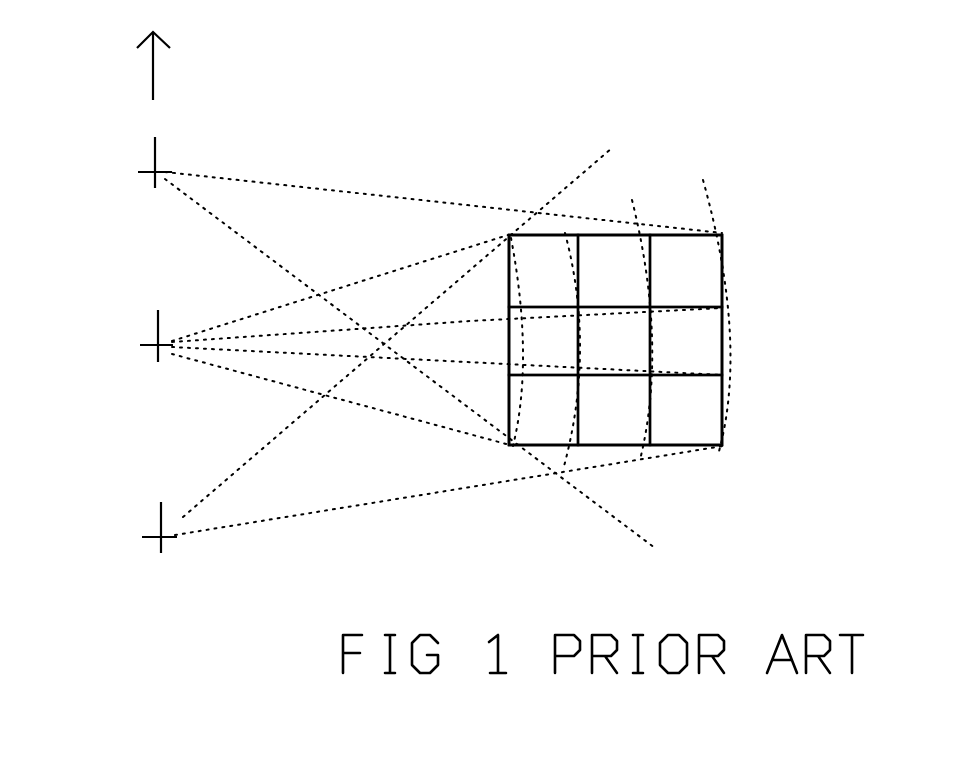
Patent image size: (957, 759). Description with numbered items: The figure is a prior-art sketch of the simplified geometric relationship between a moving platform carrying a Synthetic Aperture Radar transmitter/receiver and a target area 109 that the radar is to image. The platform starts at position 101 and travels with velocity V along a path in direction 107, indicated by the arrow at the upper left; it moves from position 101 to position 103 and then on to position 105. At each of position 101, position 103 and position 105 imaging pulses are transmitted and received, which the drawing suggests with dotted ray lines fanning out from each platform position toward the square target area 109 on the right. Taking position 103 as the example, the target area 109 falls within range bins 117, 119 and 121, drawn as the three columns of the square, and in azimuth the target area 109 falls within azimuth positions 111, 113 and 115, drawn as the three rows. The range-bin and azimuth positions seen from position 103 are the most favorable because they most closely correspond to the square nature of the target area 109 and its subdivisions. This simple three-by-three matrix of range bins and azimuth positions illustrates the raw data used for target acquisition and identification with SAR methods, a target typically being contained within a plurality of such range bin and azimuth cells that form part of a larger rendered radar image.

The position 101 is at (195, 519).
The position 103 is at (192, 328).
The position 105 is at (192, 153).
The direction 107 is at (160, 66).
The target area 109 is at (657, 356).
The azimuth position 111 is at (710, 272).
The azimuth position 113 is at (710, 337).
The azimuth position 115 is at (710, 395).
The range bin 117 is at (552, 455).
The range bin 119 is at (610, 452).
The range bin 121 is at (743, 225).